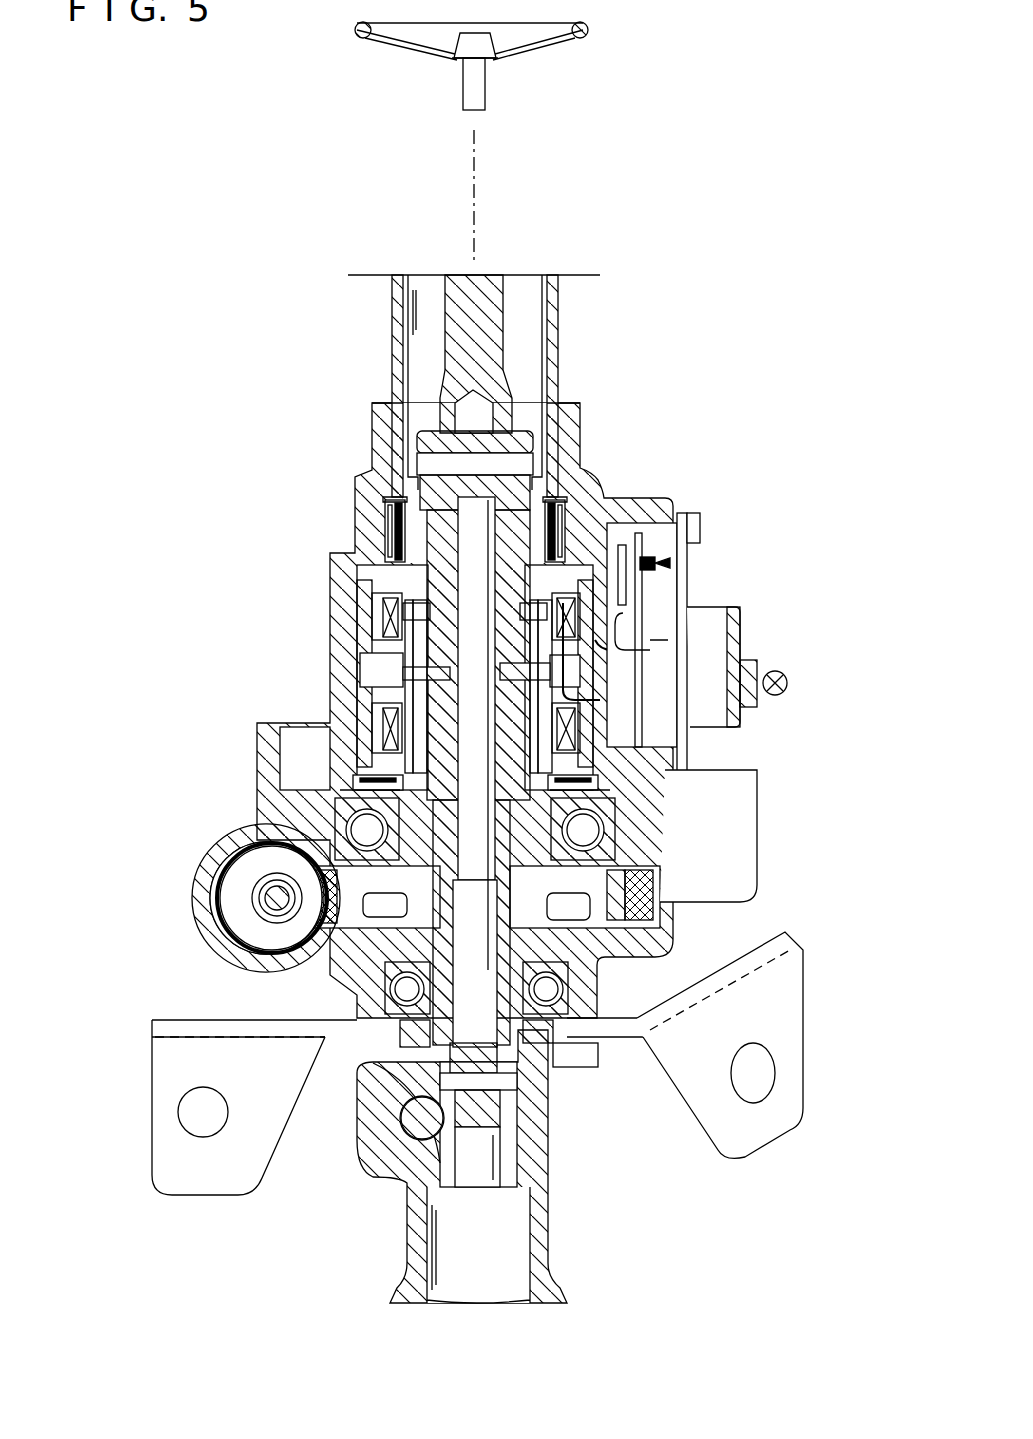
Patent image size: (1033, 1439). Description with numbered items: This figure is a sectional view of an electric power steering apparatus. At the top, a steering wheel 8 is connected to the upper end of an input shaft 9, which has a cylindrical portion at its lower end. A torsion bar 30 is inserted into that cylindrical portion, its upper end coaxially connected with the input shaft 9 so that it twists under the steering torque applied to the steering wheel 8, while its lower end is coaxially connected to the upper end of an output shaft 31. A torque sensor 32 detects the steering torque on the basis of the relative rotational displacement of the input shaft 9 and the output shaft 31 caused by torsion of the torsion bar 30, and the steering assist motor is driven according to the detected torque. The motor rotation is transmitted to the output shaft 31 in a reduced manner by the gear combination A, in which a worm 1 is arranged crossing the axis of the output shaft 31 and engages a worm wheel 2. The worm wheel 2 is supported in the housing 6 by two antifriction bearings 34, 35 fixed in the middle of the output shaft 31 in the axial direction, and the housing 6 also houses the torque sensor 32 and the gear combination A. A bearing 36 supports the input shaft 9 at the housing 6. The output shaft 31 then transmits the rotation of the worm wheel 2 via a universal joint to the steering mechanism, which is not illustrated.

The steering wheel 8 is at (592, 30).
The input shaft 9 is at (443, 352).
The bearing 36 is at (388, 498).
The torsion bar 30 is at (460, 540).
The torque sensor 32 is at (652, 685).
The antifriction bearing 34 is at (340, 778).
The housing 6 is at (224, 906).
The worm 1 is at (250, 893).
The gear combination A is at (245, 900).
The worm wheel 2 is at (290, 975).
The antifriction bearing 35 is at (355, 1020).
The output shaft 31 is at (372, 1160).